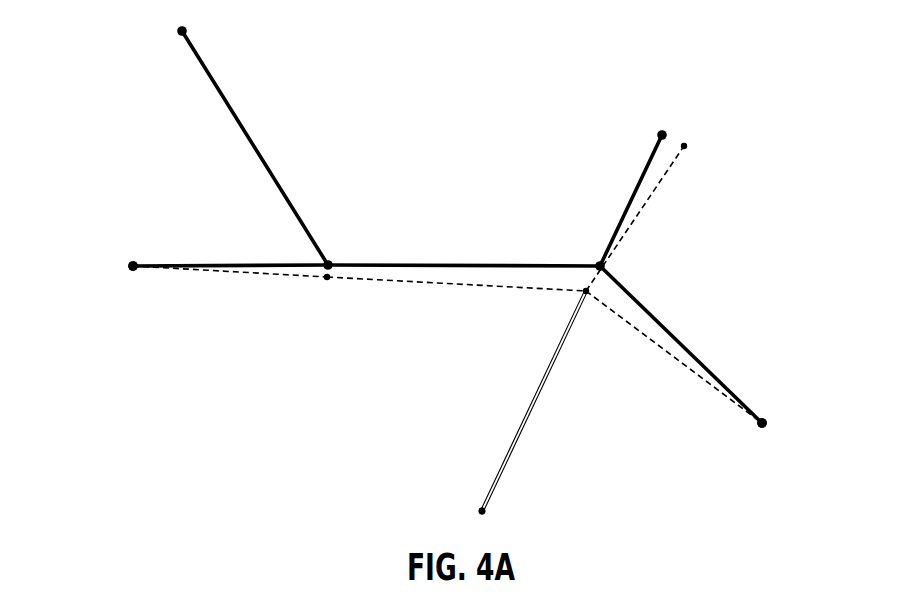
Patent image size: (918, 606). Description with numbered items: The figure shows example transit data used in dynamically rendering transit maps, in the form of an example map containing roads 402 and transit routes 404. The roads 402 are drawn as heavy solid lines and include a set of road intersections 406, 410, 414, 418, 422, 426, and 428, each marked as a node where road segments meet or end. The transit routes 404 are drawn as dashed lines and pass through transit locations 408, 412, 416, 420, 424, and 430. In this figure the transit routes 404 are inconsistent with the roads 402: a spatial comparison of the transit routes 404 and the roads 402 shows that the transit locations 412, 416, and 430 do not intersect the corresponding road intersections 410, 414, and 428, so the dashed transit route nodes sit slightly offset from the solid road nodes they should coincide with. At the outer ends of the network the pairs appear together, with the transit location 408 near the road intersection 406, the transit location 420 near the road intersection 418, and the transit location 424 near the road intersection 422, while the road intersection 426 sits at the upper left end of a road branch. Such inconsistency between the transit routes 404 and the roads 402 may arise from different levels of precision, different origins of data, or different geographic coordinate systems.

The roads 402 is at (464, 227).
The transit routes 404 is at (456, 323).
The road intersection 406 is at (82, 221).
The transit location 408 is at (82, 235).
The road intersection 410 is at (612, 98).
The transit location 412 is at (735, 112).
The road intersection 414 is at (548, 229).
The transit location 416 is at (530, 321).
The road intersection 418 is at (428, 471).
The transit location 420 is at (428, 485).
The road intersection 422 is at (814, 374).
The transit location 424 is at (814, 388).
The road intersection 426 is at (129, 68).
The road intersection 428 is at (380, 204).
The transit location 430 is at (283, 318).